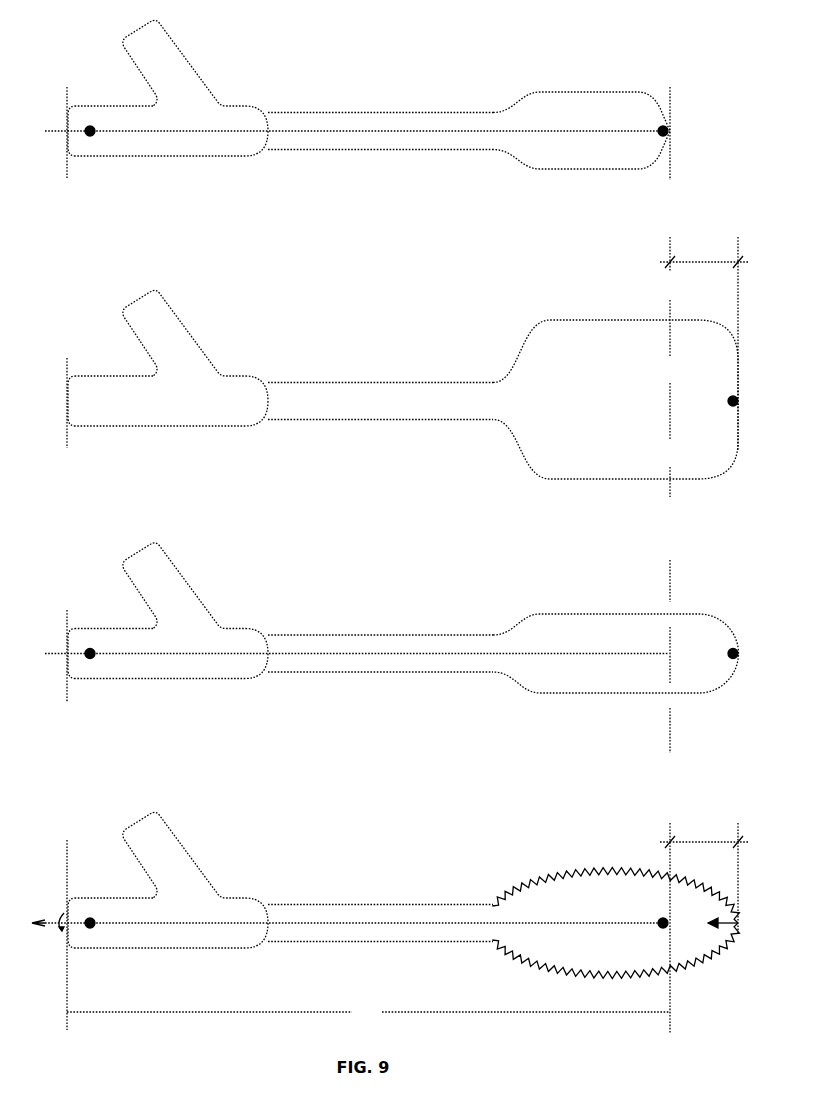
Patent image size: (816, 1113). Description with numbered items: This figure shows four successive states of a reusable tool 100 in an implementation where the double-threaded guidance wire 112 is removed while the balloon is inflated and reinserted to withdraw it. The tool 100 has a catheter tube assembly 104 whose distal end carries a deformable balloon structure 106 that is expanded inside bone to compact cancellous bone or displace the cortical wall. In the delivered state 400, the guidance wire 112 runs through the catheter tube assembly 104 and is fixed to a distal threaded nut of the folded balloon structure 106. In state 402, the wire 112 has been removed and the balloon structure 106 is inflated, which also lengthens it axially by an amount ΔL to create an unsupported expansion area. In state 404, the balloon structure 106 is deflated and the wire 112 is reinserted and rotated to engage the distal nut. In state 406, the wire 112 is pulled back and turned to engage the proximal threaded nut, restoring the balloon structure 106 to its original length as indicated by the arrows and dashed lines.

The reusable tool 100 is at (374, 28).
The catheter tube assembly 104 is at (335, 111).
The balloon structure 106 is at (590, 91).
The double-threaded guidance wire 112 is at (551, 128).
The delivered state 400 is at (60, 109).
The inflated state 402 is at (60, 380).
The reinserted state 404 is at (60, 628).
The restored state 406 is at (60, 902).